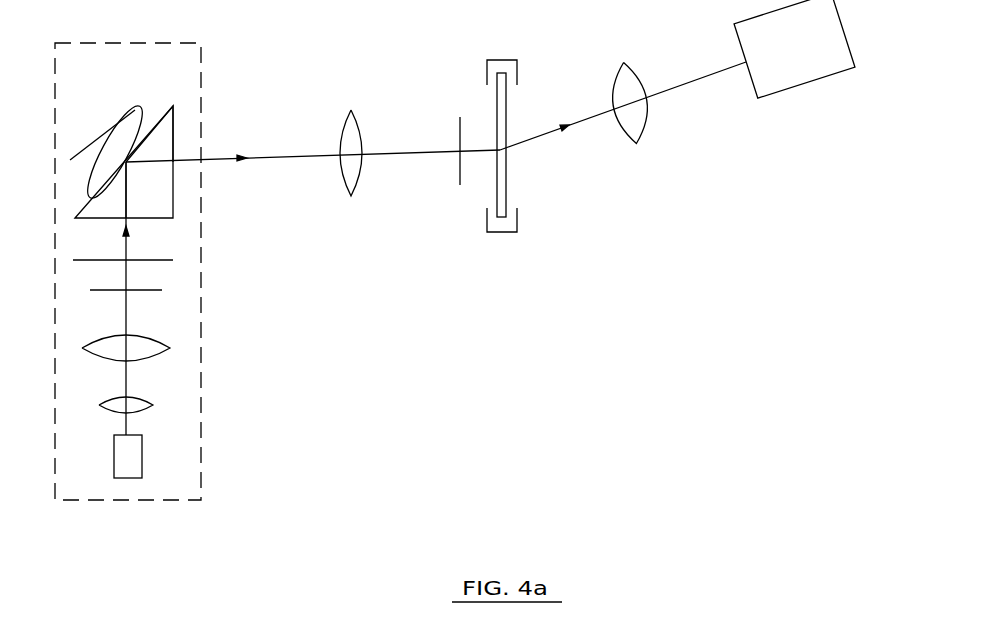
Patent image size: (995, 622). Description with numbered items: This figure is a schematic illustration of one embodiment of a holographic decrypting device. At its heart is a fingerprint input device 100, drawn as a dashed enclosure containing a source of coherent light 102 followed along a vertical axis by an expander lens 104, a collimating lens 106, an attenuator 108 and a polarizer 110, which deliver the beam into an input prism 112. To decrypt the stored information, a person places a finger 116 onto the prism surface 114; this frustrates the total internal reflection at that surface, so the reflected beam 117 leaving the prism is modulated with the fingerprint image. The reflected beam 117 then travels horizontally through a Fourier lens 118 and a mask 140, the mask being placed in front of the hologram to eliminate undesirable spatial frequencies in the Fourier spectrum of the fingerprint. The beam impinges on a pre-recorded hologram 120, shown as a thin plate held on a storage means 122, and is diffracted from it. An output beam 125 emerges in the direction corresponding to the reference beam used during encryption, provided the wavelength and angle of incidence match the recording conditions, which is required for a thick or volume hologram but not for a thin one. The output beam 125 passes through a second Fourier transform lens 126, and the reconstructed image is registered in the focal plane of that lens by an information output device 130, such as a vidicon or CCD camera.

The fingerprint input device 100 is at (151, 42).
The source of coherent light 102 is at (148, 457).
The expander lens 104 is at (185, 420).
The collimating lens 106 is at (172, 348).
The attenuator 108 is at (184, 308).
The polarizer 110 is at (141, 260).
The input prism 112 is at (113, 222).
The prism surface 114 is at (160, 107).
The finger 116 is at (107, 132).
The reflected beam 117 is at (280, 150).
The Fourier lens 118 is at (362, 182).
The pre-recorded hologram 120 is at (492, 105).
The storage means 122 is at (518, 221).
The output beam 125 is at (582, 130).
The Fourier transform lens 126 is at (634, 140).
The information output device 130 is at (840, 80).
The mask 140 is at (457, 173).